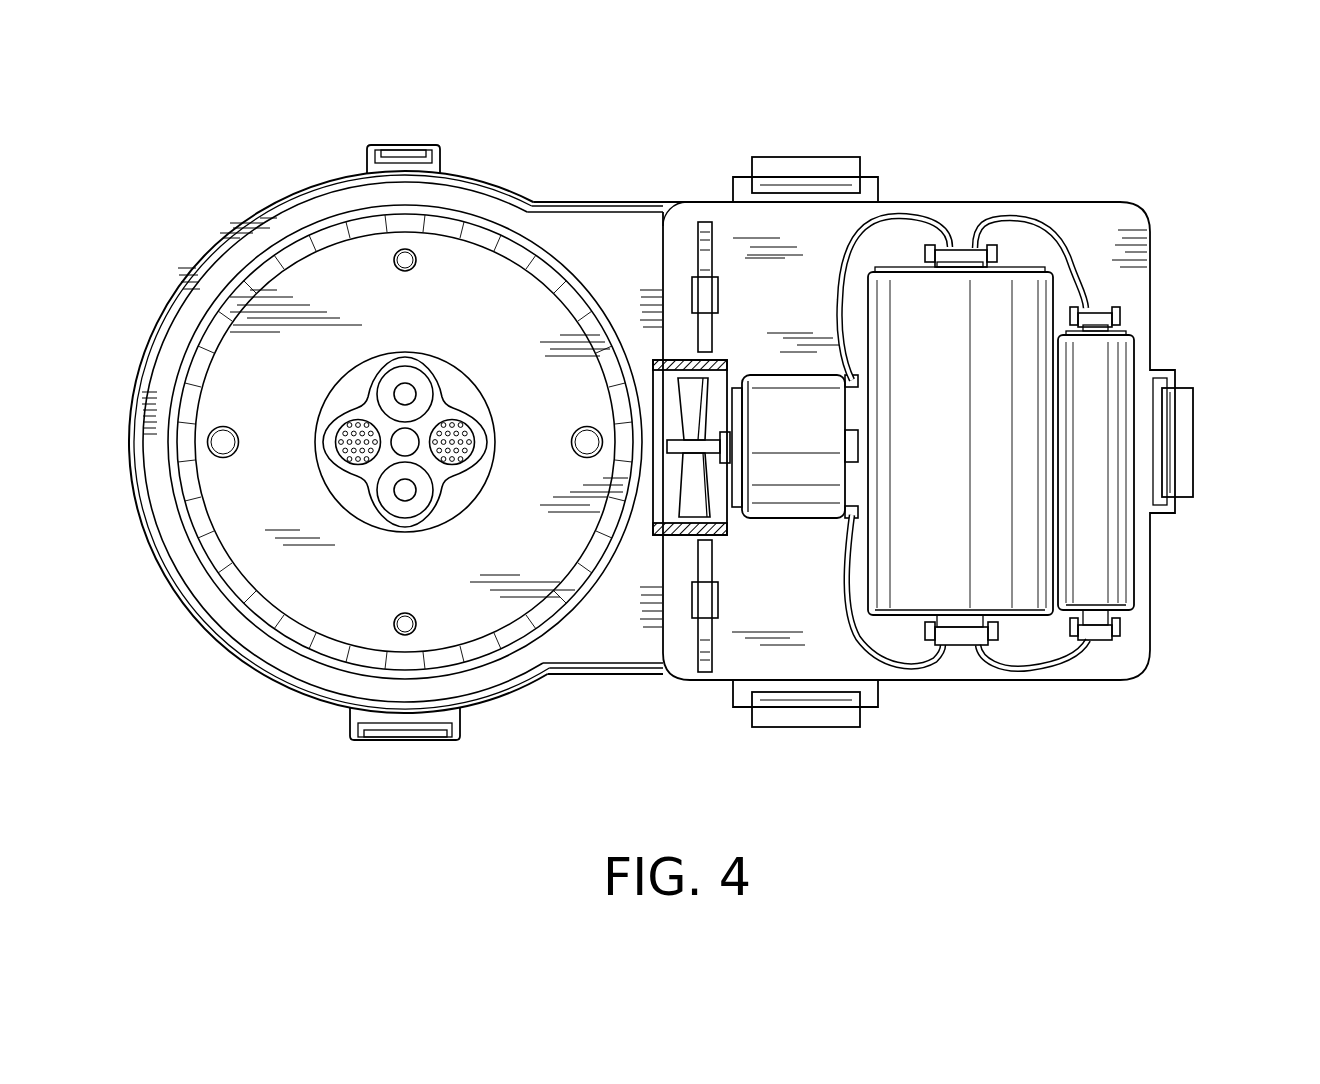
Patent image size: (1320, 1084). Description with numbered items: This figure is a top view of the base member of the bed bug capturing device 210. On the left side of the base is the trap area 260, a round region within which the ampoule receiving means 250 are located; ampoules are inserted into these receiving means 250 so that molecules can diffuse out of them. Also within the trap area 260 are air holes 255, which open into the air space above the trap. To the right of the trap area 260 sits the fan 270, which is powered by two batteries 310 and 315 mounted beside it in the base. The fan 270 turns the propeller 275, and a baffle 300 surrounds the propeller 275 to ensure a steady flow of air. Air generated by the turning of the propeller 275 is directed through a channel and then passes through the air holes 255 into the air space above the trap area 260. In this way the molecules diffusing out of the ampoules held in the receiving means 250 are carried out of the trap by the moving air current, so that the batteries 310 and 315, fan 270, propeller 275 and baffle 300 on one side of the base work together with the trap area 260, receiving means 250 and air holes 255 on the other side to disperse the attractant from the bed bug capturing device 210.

The bed bug capturing device 210 is at (585, 640).
The ampoule receiving means 250 is at (407, 394).
The air holes 255 is at (358, 442).
The trap area 260 is at (342, 275).
The fan 270 is at (807, 470).
The propeller 275 is at (692, 397).
The baffle 300 is at (678, 537).
The battery 310 is at (1093, 361).
The battery 315 is at (948, 538).